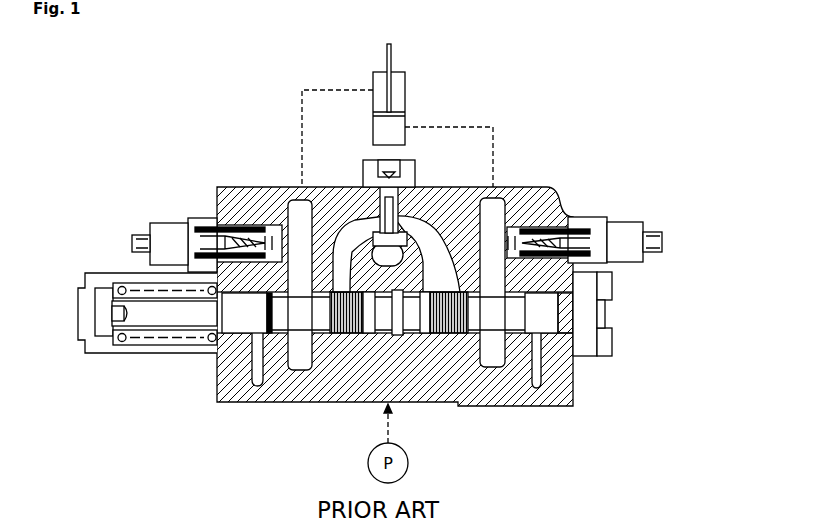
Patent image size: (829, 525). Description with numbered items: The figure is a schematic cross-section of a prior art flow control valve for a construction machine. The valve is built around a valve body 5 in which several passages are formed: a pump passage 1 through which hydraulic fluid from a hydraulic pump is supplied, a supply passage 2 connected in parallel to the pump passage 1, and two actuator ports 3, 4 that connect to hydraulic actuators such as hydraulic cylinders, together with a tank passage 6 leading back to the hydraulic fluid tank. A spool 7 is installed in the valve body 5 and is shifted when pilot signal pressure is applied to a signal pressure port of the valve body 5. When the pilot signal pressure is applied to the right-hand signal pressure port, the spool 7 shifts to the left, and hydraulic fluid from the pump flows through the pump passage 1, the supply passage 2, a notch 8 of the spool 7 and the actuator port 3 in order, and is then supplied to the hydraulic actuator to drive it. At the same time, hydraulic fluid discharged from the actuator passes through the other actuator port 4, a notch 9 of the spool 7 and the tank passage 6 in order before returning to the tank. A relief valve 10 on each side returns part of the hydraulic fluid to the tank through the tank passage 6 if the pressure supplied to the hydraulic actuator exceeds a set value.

The pump passage 1 is at (411, 205).
The supply passage 2 is at (450, 235).
The actuator port 3 is at (493, 190).
The actuator port 4 is at (300, 196).
The valve body 5 is at (233, 187).
The tank passage 6 is at (250, 340).
The spool 7 is at (213, 362).
The notch 8 is at (472, 345).
The notch 9 is at (272, 340).
The relief valve 10 is at (148, 214).